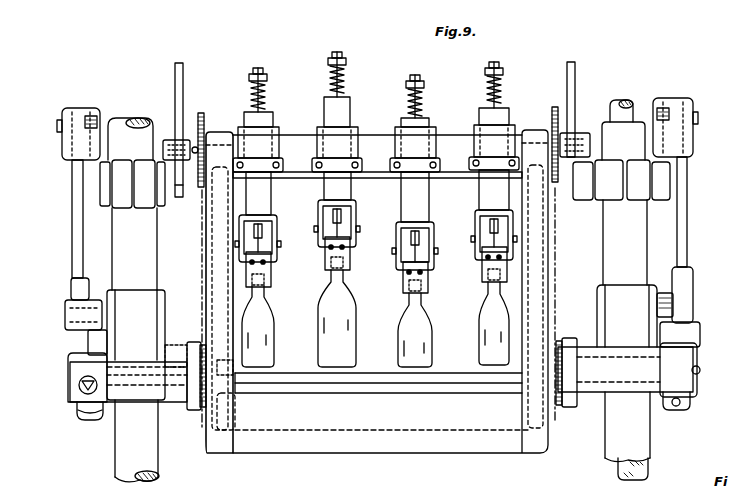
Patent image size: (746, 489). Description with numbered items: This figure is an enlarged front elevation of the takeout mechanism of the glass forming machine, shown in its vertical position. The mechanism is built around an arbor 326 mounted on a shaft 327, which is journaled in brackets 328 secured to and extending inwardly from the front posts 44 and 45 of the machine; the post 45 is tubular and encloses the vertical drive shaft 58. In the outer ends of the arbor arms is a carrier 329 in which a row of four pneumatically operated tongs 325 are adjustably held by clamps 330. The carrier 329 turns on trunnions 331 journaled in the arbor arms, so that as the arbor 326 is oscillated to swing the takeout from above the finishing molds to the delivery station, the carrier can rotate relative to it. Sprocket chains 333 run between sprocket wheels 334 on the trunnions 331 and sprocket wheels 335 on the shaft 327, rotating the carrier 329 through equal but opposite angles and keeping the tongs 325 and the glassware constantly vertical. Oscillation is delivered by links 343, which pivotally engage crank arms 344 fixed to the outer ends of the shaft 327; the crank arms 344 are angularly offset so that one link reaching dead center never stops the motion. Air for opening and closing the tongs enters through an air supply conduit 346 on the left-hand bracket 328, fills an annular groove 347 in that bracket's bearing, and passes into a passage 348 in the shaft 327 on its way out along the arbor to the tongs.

The tongs 325 is at (320, 240).
The arbor 326 is at (212, 249).
The shaft 327 is at (112, 405).
The brackets 328 is at (152, 392).
The carrier 329 is at (370, 140).
The clamps 330 is at (257, 163).
The trunnions 331 is at (218, 133).
The sprocket chains 333 is at (200, 273).
The sprocket wheels 334 is at (205, 410).
The sprocket wheels 335 is at (200, 110).
The links 343 is at (75, 221).
The crank arms 344 is at (97, 339).
The air supply conduit 346 is at (180, 373).
The annular groove 347 is at (173, 378).
The passage 348 is at (178, 345).
The post or column 44 is at (127, 452).
The tubular post or column 45 is at (618, 438).
The vertical shaft 58 is at (638, 468).